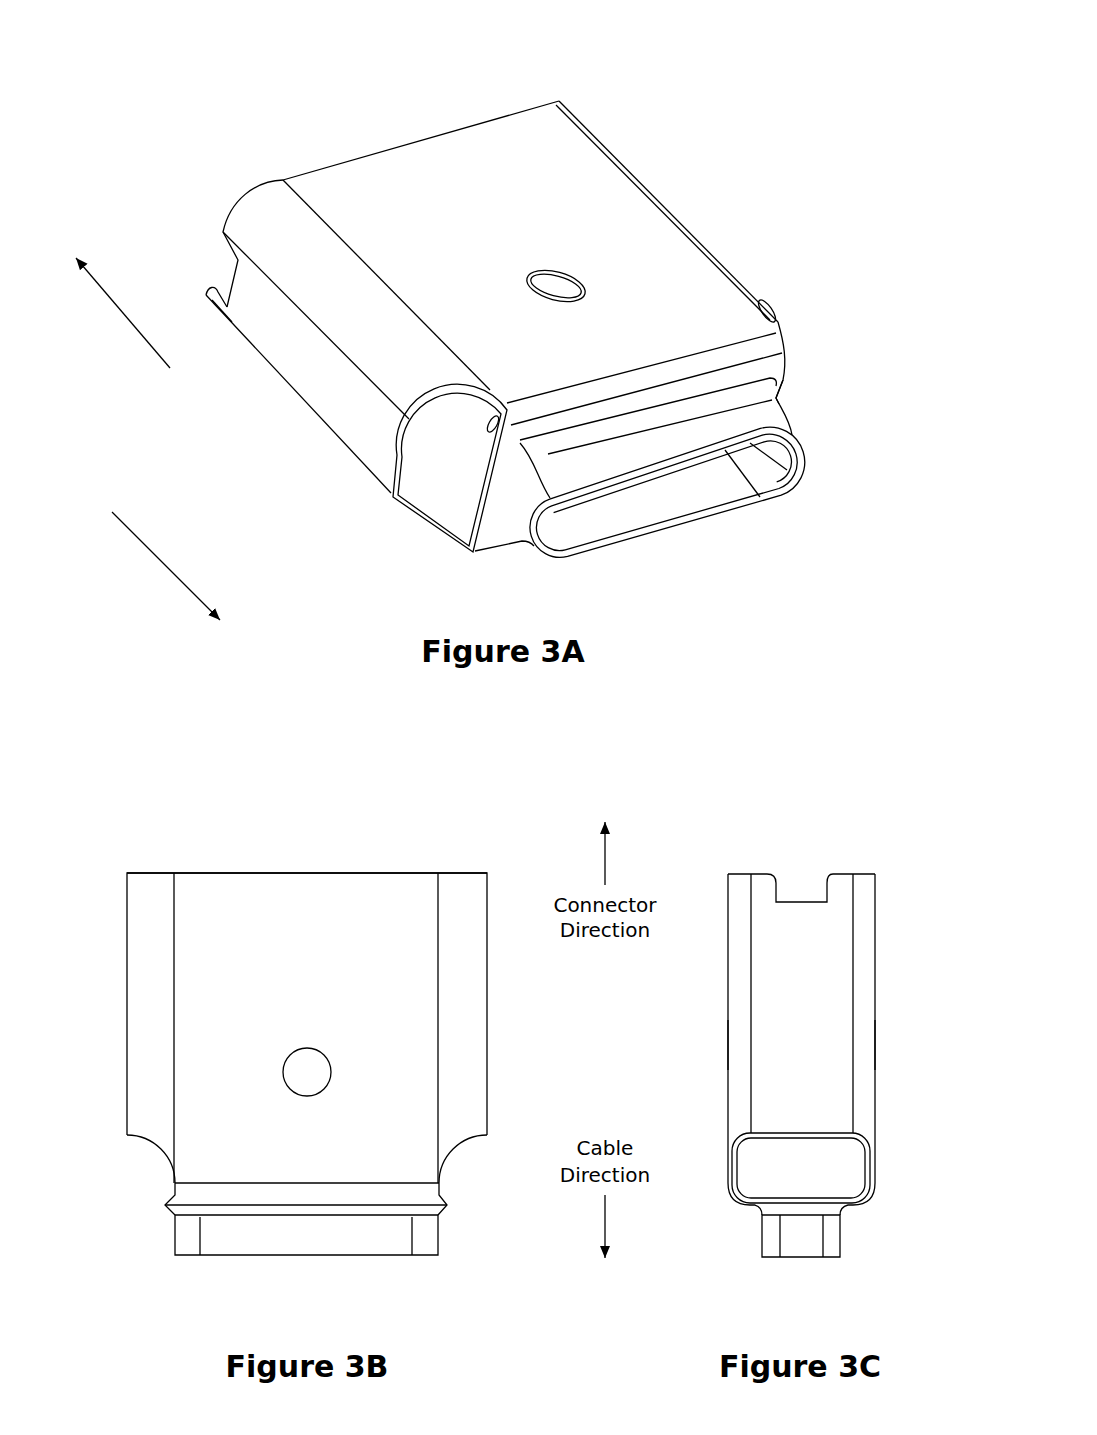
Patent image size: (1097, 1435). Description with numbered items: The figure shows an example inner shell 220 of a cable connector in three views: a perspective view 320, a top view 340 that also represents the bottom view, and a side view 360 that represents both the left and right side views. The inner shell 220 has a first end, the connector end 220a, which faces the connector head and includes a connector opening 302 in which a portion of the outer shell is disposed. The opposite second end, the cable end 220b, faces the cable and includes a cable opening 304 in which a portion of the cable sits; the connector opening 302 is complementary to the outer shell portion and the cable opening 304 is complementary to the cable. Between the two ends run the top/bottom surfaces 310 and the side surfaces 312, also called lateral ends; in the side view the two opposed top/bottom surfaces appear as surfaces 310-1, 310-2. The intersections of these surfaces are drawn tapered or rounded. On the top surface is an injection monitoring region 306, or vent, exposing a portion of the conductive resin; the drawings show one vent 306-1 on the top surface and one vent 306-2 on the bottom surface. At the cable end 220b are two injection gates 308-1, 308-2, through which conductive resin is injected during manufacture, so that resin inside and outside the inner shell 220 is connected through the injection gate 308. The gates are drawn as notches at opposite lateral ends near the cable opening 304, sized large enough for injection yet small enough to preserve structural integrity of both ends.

In FIG. 3A, the perspective view 320 is at (190, 129).
In FIG. 3A, the inner shell 220 is at (829, 96).
In FIG. 3A, the connector end 220a is at (611, 85).
In FIG. 3A, the cable end 220b is at (814, 326).
In FIG. 3A, the connector opening 302 is at (392, 132).
In FIG. 3B, the connector opening 302 is at (323, 855).
In FIG. 3C, the connector opening 302 is at (812, 868).
In FIG. 3A, the cable opening 304 is at (657, 510).
In FIG. 3B, the cable opening 304 is at (205, 1262).
In FIG. 3C, the cable opening 304 is at (812, 1268).
In FIG. 3B, the injection monitoring region 306 is at (314, 1066).
In FIG. 3A, the injection monitoring region 306-1 is at (556, 285).
In FIG. 3C, the injection monitoring region 306-1 is at (878, 1047).
In FIG. 3A, the injection monitoring region 306-2 is at (487, 432).
In FIG. 3C, the injection monitoring region 306-2 is at (727, 1047).
In FIG. 3C, the injection gate 308 is at (843, 1172).
In FIG. 3A, the injection gate 308-1 is at (447, 509).
In FIG. 3B, the injection gate 308-1 is at (452, 1172).
In FIG. 3A, the injection gate 308-2 is at (783, 406).
In FIG. 3B, the injection gate 308-2 is at (165, 1172).
In FIG. 3A, the top/bottom surface 310 is at (492, 182).
In FIG. 3B, the top/bottom surface 310 is at (220, 980).
In FIG. 3C, the top/bottom surface 310-1 is at (876, 925).
In FIG. 3C, the top/bottom surface 310-2 is at (727, 932).
In FIG. 3A, the side surface 312 is at (320, 378).
In FIG. 3C, the side surface 312 is at (785, 1110).
In FIG. 3B, the top view 340 is at (178, 790).
In FIG. 3C, the side view 360 is at (765, 790).